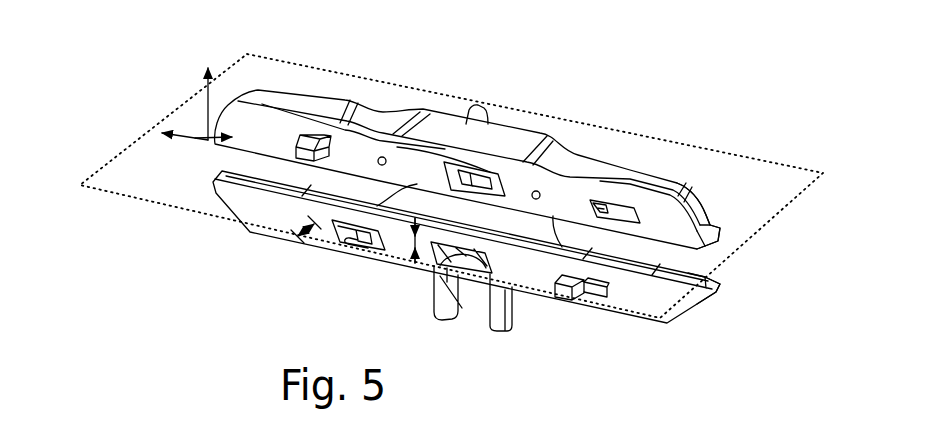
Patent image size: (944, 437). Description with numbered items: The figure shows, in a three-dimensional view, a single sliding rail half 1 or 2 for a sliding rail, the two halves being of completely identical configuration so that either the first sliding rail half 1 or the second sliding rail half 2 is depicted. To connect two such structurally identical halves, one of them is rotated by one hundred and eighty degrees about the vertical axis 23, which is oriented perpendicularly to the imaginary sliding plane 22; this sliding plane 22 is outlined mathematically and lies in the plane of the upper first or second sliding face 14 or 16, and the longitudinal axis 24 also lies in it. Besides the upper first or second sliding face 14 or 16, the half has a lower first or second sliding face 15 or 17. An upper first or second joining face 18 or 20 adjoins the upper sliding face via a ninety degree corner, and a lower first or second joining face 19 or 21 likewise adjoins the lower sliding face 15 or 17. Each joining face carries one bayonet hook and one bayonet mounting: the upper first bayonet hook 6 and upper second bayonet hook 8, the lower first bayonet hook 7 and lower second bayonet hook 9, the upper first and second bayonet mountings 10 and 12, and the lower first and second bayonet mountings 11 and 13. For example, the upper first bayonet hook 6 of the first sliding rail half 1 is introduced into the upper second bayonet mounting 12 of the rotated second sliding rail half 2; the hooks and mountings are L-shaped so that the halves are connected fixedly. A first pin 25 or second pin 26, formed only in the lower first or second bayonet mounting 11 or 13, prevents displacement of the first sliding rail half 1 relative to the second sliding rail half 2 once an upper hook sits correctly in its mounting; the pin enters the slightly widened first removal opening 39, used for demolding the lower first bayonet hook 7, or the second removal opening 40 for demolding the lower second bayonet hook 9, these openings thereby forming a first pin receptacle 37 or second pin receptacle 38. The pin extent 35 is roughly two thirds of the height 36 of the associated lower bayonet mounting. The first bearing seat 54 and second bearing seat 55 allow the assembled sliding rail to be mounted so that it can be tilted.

The first sliding rail half 1 is at (467, 133).
The second sliding rail half 2 is at (507, 85).
The upper first bayonet hook 6 is at (239, 160).
The upper second bayonet hook 8 is at (294, 148).
The lower first bayonet hook 7 is at (549, 331).
The lower second bayonet hook 9 is at (552, 301).
The upper first bayonet mounting 10 is at (698, 165).
The upper second bayonet mounting 12 is at (651, 209).
The lower first bayonet mounting 11 is at (352, 273).
The lower second bayonet mounting 13 is at (370, 258).
The upper first sliding face 14 is at (766, 224).
The upper second sliding face 16 is at (699, 254).
The lower first sliding face 15 is at (760, 288).
The lower second sliding face 17 is at (685, 277).
The upper first joining face 18 is at (130, 161).
The upper second joining face 20 is at (196, 138).
The lower first joining face 19 is at (419, 247).
The lower second joining face 21 is at (247, 205).
The sliding plane 22 is at (629, 135).
The vertical axis 23 is at (206, 102).
The longitudinal axis 24 is at (160, 133).
The first pin 25 is at (304, 274).
The second pin 26 is at (343, 241).
The extent of the pin 35 is at (300, 228).
The height of the bayonet mounting 36 is at (415, 263).
The first pin receptacle 37 is at (618, 348).
The first removal opening 39 is at (618, 348).
The second pin receptacle 38 is at (618, 348).
The second removal opening 40 is at (594, 308).
The first bearing seat 54 is at (456, 336).
The second bearing seat 55 is at (497, 321).